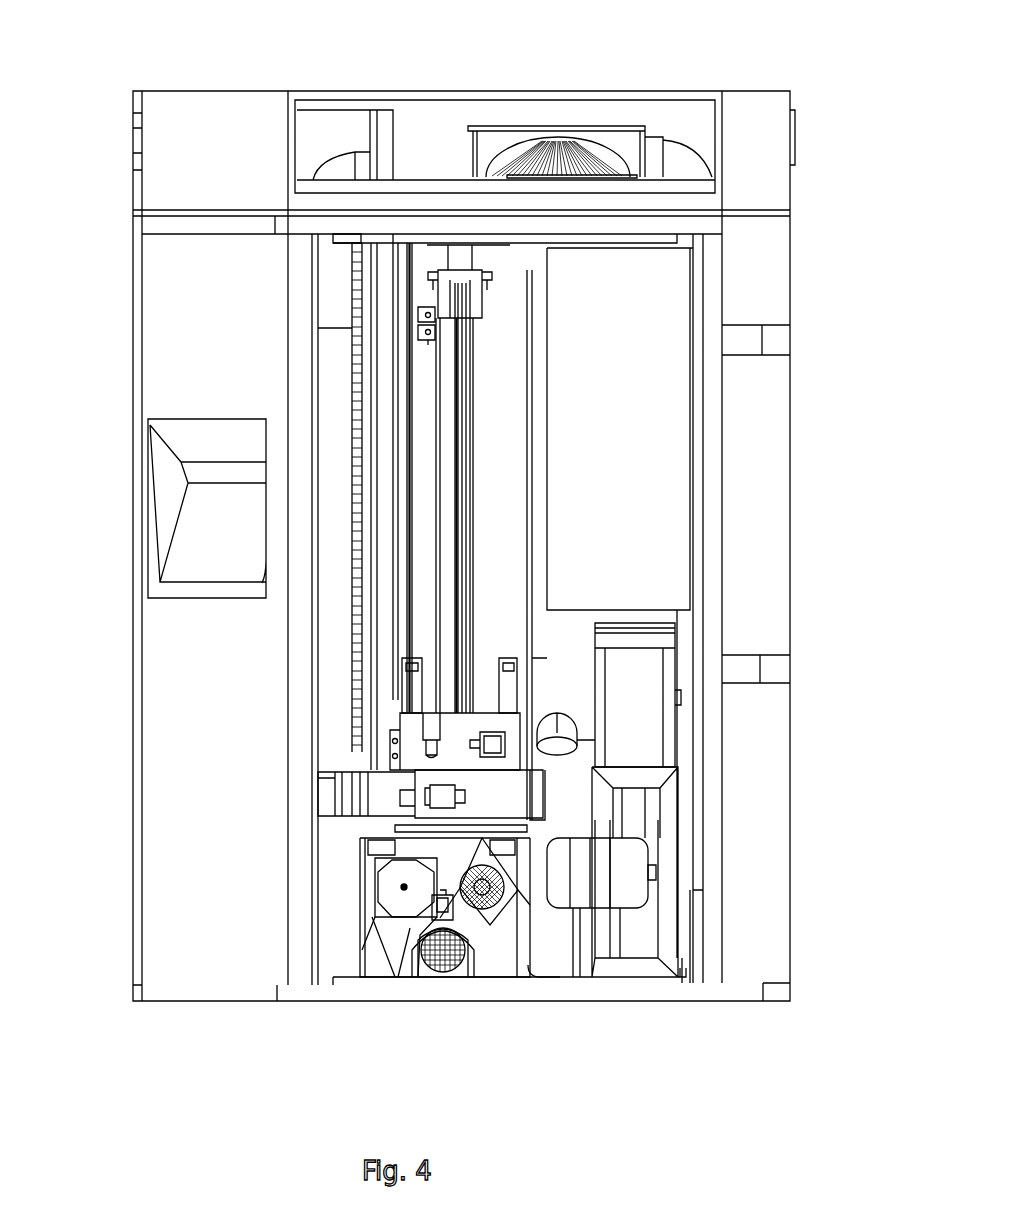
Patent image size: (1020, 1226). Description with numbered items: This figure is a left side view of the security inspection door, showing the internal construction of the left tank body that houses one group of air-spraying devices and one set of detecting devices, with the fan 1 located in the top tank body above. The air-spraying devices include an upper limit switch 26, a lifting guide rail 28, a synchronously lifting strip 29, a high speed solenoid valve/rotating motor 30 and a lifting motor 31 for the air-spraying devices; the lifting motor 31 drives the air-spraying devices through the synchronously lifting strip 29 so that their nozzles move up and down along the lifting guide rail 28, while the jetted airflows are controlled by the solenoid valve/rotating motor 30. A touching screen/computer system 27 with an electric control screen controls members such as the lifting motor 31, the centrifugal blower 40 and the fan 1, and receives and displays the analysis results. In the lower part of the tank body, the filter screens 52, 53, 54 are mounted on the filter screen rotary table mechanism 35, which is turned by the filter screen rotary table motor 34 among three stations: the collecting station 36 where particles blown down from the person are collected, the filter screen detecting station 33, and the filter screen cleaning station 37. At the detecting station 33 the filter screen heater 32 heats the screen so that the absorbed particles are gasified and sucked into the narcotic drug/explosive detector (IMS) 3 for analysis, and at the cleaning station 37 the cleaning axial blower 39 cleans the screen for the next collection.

The fan 1 is at (510, 135).
The upper limit switch 26 is at (420, 313).
The touching screen/computer system 27 is at (197, 545).
The lifting guide rail 28 is at (453, 522).
The synchronously lifting strip 29 is at (460, 718).
The high speed solenoid valve/rotating motor 30 is at (490, 745).
The lifting motor for the air-spraying devices 31 is at (410, 793).
The filter screen heater 32 is at (415, 870).
The filter screen detecting station 33 is at (402, 887).
The filter screen 52 is at (435, 893).
The narcotic drug/explosive detector (IMS) 3 is at (378, 915).
The filter screen rotary table motor 34 is at (370, 962).
The filter screen rotary table mechanism 35 is at (402, 927).
The collecting station 36 is at (430, 970).
The filter screen 53 is at (448, 970).
The filter screen cleaning station 37 is at (479, 915).
The filter screen 54 is at (493, 908).
The cleaning axial blower 39 is at (505, 907).
The centrifugal blower 40 is at (636, 728).